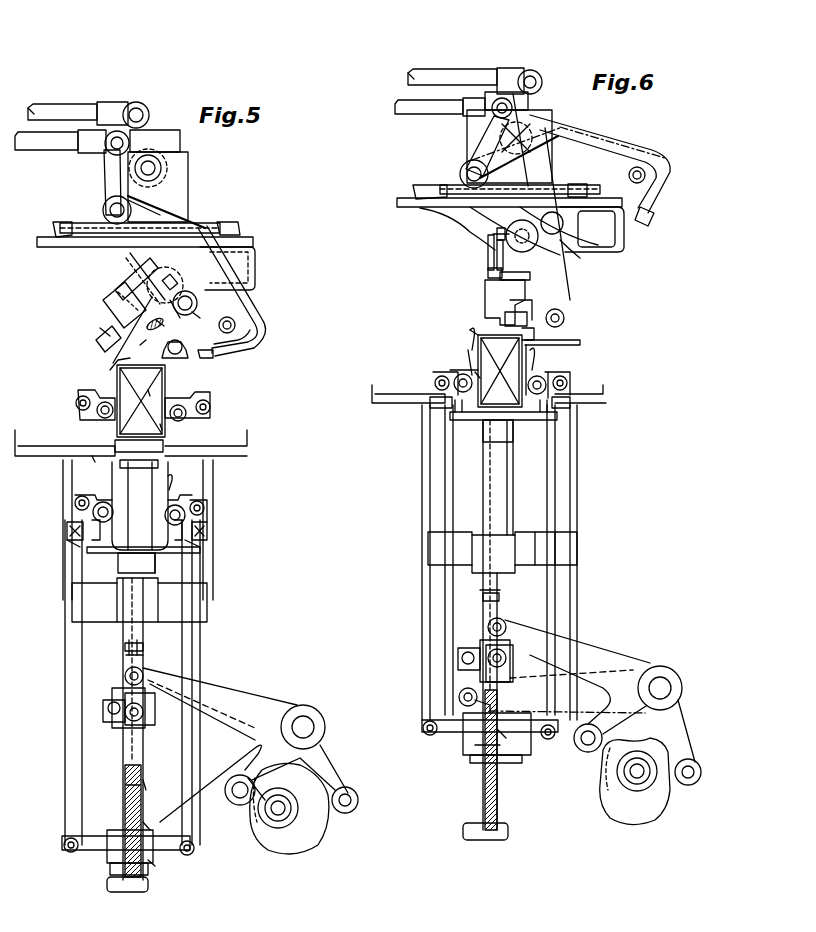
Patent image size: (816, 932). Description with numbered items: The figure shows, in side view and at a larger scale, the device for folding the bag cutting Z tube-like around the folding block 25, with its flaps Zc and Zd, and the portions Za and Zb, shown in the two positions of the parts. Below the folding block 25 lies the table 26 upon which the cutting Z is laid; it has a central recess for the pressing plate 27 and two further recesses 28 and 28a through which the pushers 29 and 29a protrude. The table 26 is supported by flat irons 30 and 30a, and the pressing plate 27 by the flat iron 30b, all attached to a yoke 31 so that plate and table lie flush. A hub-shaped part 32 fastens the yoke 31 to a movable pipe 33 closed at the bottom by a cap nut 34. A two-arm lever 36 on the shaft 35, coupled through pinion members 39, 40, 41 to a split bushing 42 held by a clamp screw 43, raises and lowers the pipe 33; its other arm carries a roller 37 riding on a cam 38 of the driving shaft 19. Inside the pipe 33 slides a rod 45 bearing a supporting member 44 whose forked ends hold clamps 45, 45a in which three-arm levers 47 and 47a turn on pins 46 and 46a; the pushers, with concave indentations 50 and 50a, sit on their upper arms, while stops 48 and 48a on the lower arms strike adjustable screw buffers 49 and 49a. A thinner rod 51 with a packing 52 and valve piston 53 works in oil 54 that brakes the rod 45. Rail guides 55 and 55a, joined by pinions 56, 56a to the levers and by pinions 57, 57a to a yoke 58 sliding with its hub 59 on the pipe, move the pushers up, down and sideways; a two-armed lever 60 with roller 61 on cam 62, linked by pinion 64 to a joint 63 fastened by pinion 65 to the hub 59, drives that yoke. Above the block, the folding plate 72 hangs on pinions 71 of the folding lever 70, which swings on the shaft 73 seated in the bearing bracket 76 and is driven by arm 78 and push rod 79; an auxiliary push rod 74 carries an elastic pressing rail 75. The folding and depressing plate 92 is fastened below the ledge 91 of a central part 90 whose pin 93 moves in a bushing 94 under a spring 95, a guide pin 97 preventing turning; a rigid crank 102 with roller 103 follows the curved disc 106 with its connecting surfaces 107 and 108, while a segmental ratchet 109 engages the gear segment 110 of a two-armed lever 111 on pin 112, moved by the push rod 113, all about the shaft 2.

In FIG. 5, the shaft 2 is at (161, 327).
In FIG. 5, the driving shaft 19 is at (280, 815).
In FIG. 6, the driving shaft 19 is at (645, 780).
In FIG. 5, the folding block 25 is at (176, 392).
In FIG. 6, the folding block 25 is at (490, 330).
In FIG. 5, the table 26 is at (34, 459).
In FIG. 6, the table 26 is at (402, 400).
In FIG. 5, the pressing plate 27 is at (160, 463).
In FIG. 6, the pressing plate 27 is at (514, 428).
In FIG. 5, the recess 28 is at (214, 459).
In FIG. 5, the recess 28a is at (92, 460).
In FIG. 5, the pusher 29 is at (160, 505).
In FIG. 6, the pusher 29 is at (532, 368).
In FIG. 5, the pusher 29a is at (128, 490).
In FIG. 6, the pusher 29a is at (470, 352).
In FIG. 5, the flat iron 30 is at (213, 525).
In FIG. 6, the flat iron 30 is at (577, 468).
In FIG. 5, the flat iron 30a is at (63, 516).
In FIG. 6, the flat iron 30a is at (430, 476).
In FIG. 5, the flat iron 30b is at (150, 555).
In FIG. 5, the yoke 31 is at (160, 620).
In FIG. 6, the yoke 31 is at (530, 545).
In FIG. 5, the hub-shaped part 32 is at (114, 622).
In FIG. 6, the hub-shaped part 32 is at (482, 532).
In FIG. 5, the movable pipe 33 is at (146, 656).
In FIG. 6, the movable pipe 33 is at (500, 592).
In FIG. 5, the cap nut 34 is at (143, 892).
In FIG. 6, the cap nut 34 is at (510, 835).
In FIG. 5, the shaft 35 is at (312, 715).
In FIG. 6, the shaft 35 is at (670, 695).
In FIG. 5, the two-arm lever 36 is at (219, 686).
In FIG. 6, the two-arm lever 36 is at (595, 652).
In FIG. 5, the roller 37 is at (236, 798).
In FIG. 6, the roller 37 is at (595, 762).
In FIG. 5, the cam 38 is at (268, 828).
In FIG. 6, the cam 38 is at (605, 785).
In FIG. 5, the pinion member 39 is at (126, 674).
In FIG. 6, the pinion member 39 is at (506, 624).
In FIG. 5, the pinion member 40 is at (120, 690).
In FIG. 6, the pinion member 40 is at (482, 640).
In FIG. 5, the pinion member 41 is at (120, 728).
In FIG. 6, the pinion member 41 is at (508, 664).
In FIG. 5, the split bushing 42 is at (156, 722).
In FIG. 6, the split bushing 42 is at (515, 680).
In FIG. 5, the clamp screw 43 is at (108, 704).
In FIG. 6, the clamp screw 43 is at (470, 652).
In FIG. 5, the supporting member 44 is at (118, 566).
In FIG. 6, the supporting member 44 is at (484, 440).
In FIG. 5, the rod 45 is at (182, 504).
In FIG. 6, the rod 45 is at (548, 380).
In FIG. 5, the clamp 45a is at (103, 500).
In FIG. 6, the clamp 45a is at (474, 374).
In FIG. 5, the pin 46 is at (170, 522).
In FIG. 6, the pin 46 is at (575, 400).
In FIG. 5, the pin 46a is at (108, 520).
In FIG. 6, the pin 46a is at (470, 366).
In FIG. 5, the three-arm lever 47 is at (208, 498).
In FIG. 6, the three-arm lever 47 is at (575, 382).
In FIG. 5, the three-arm lever 47a is at (67, 533).
In FIG. 6, the three-arm lever 47a is at (452, 372).
In FIG. 5, the stop 48 is at (200, 552).
In FIG. 6, the stop 48 is at (540, 420).
In FIG. 5, the stop 48a is at (118, 557).
In FIG. 6, the stop 48a is at (464, 420).
In FIG. 5, the screw buffer 49 is at (207, 540).
In FIG. 6, the screw buffer 49 is at (578, 412).
In FIG. 5, the screw buffer 49a is at (67, 540).
In FIG. 6, the screw buffer 49a is at (432, 412).
In FIG. 5, the concave indentation 50 is at (172, 483).
In FIG. 6, the concave indentation 50 is at (536, 355).
In FIG. 5, the concave indentation 50a is at (118, 448).
In FIG. 6, the concave indentation 50a is at (468, 333).
In FIG. 5, the rod 51 is at (143, 753).
In FIG. 6, the rod 51 is at (500, 706).
In FIG. 5, the packing 52 is at (126, 648).
In FIG. 6, the packing 52 is at (488, 595).
In FIG. 5, the valve piston 53 is at (126, 790).
In FIG. 6, the valve piston 53 is at (475, 752).
In FIG. 5, the oil 54 is at (128, 806).
In FIG. 6, the oil 54 is at (480, 785).
In FIG. 5, the rail guide 55 is at (200, 634).
In FIG. 6, the rail guide 55 is at (560, 592).
In FIG. 5, the rail guide 55a is at (78, 634).
In FIG. 6, the rail guide 55a is at (428, 592).
In FIG. 5, the pinion 56 is at (205, 507).
In FIG. 6, the pinion 56 is at (568, 384).
In FIG. 5, the pinion 56a is at (76, 500).
In FIG. 6, the pinion 56a is at (441, 384).
In FIG. 5, the pinion 57 is at (194, 852).
In FIG. 6, the pinion 57 is at (556, 730).
In FIG. 5, the pinion 57a is at (64, 850).
In FIG. 6, the pinion 57a is at (424, 728).
In FIG. 5, the yoke 58 is at (100, 860).
In FIG. 6, the yoke 58 is at (535, 745).
In FIG. 5, the hub 59 is at (105, 874).
In FIG. 6, the hub 59 is at (512, 748).
In FIG. 5, the two-armed lever 60 is at (236, 750).
In FIG. 6, the two-armed lever 60 is at (569, 646).
In FIG. 5, the roller 61 is at (358, 798).
In FIG. 6, the roller 61 is at (702, 772).
In FIG. 5, the cam 62 is at (318, 834).
In FIG. 6, the cam 62 is at (632, 822).
In FIG. 5, the joint 63 is at (150, 828).
In FIG. 6, the joint 63 is at (478, 708).
In FIG. 5, the pinion 64 is at (146, 786).
In FIG. 6, the pinion 64 is at (470, 692).
In FIG. 5, the pinion 65 is at (152, 866).
In FIG. 6, the pinion 65 is at (505, 735).
In FIG. 5, the folding lever 70 is at (257, 319).
In FIG. 6, the folding lever 70 is at (560, 310).
In FIG. 5, the pinion 71 is at (236, 325).
In FIG. 6, the pinion 71 is at (565, 325).
In FIG. 5, the folding plate 72 is at (222, 352).
In FIG. 6, the folding plate 72 is at (590, 345).
In FIG. 5, the shaft 73 is at (103, 212).
In FIG. 6, the shaft 73 is at (461, 174).
In FIG. 5, the auxiliary push rod 74 is at (256, 305).
In FIG. 6, the auxiliary push rod 74 is at (585, 280).
In FIG. 5, the elastic pressing rail 75 is at (185, 361).
In FIG. 6, the elastic pressing rail 75 is at (522, 345).
In FIG. 5, the bearing bracket 76 is at (182, 178).
In FIG. 6, the bearing bracket 76 is at (509, 137).
In FIG. 5, the arm 78 is at (105, 183).
In FIG. 6, the arm 78 is at (478, 140).
In FIG. 5, the push rod 79 is at (32, 147).
In FIG. 6, the push rod 79 is at (404, 112).
In FIG. 5, the central part 90 is at (110, 305).
In FIG. 6, the central part 90 is at (490, 297).
In FIG. 5, the ledge 91 is at (100, 331).
In FIG. 6, the ledge 91 is at (515, 308).
In FIG. 5, the folding and depressing plate 92 is at (100, 345).
In FIG. 6, the folding and depressing plate 92 is at (524, 320).
In FIG. 5, the pin 93 is at (152, 329).
In FIG. 6, the pin 93 is at (528, 280).
In FIG. 5, the bushing 94 is at (178, 318).
In FIG. 6, the bushing 94 is at (488, 258).
In FIG. 5, the spring 95 is at (175, 281).
In FIG. 6, the spring 95 is at (512, 230).
In FIG. 5, the guide pin 97 is at (118, 292).
In FIG. 6, the guide pin 97 is at (488, 274).
In FIG. 5, the rigid crank 102 is at (192, 293).
In FIG. 6, the rigid crank 102 is at (535, 250).
In FIG. 5, the roller 103 is at (192, 312).
In FIG. 6, the roller 103 is at (565, 226).
In FIG. 5, the curved disc 106 is at (256, 263).
In FIG. 6, the curved disc 106 is at (620, 232).
In FIG. 5, the connecting surface 107 is at (130, 256).
In FIG. 6, the connecting surface 107 is at (578, 256).
In FIG. 6, the connecting surface 108 is at (462, 233).
In FIG. 5, the segmental ratchet 109 is at (216, 226).
In FIG. 6, the segmental ratchet 109 is at (578, 192).
In FIG. 5, the gear segment 110 is at (178, 212).
In FIG. 6, the gear segment 110 is at (530, 178).
In FIG. 5, the two-armed lever 111 is at (149, 118).
In FIG. 6, the two-armed lever 111 is at (542, 90).
In FIG. 5, the pin 112 is at (160, 167).
In FIG. 6, the pin 112 is at (535, 150).
In FIG. 5, the push rod 113 is at (58, 105).
In FIG. 6, the push rod 113 is at (435, 71).
In FIG. 5, the cutting Z is at (189, 442).
In FIG. 6, the cutting Z is at (500, 371).
In FIG. 5, the package side Za is at (163, 420).
In FIG. 5, the package side Zb is at (148, 395).
In FIG. 5, the flap Zc is at (165, 340).
In FIG. 5, the flap Zd is at (148, 326).